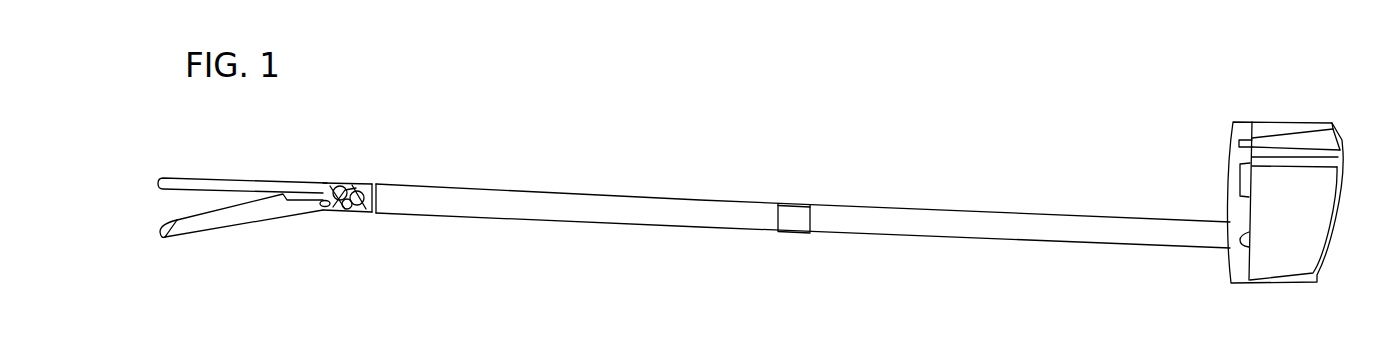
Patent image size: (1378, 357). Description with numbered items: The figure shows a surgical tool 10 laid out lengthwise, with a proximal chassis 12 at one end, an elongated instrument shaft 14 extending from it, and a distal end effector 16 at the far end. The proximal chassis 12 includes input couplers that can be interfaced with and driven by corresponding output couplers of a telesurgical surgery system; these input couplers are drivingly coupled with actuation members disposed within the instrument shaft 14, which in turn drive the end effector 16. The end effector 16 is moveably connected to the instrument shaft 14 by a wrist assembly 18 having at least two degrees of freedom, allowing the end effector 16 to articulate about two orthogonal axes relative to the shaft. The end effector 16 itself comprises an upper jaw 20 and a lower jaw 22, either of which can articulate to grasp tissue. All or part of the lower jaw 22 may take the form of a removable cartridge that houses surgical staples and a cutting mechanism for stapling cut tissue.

The surgical tool 10 is at (785, 143).
The proximal chassis 12 is at (1262, 88).
The instrument shaft 14 is at (473, 218).
The distal end effector 16 is at (262, 182).
The wrist assembly 18 is at (343, 158).
The upper jaw 20 is at (203, 178).
The lower jaw 22 is at (240, 214).